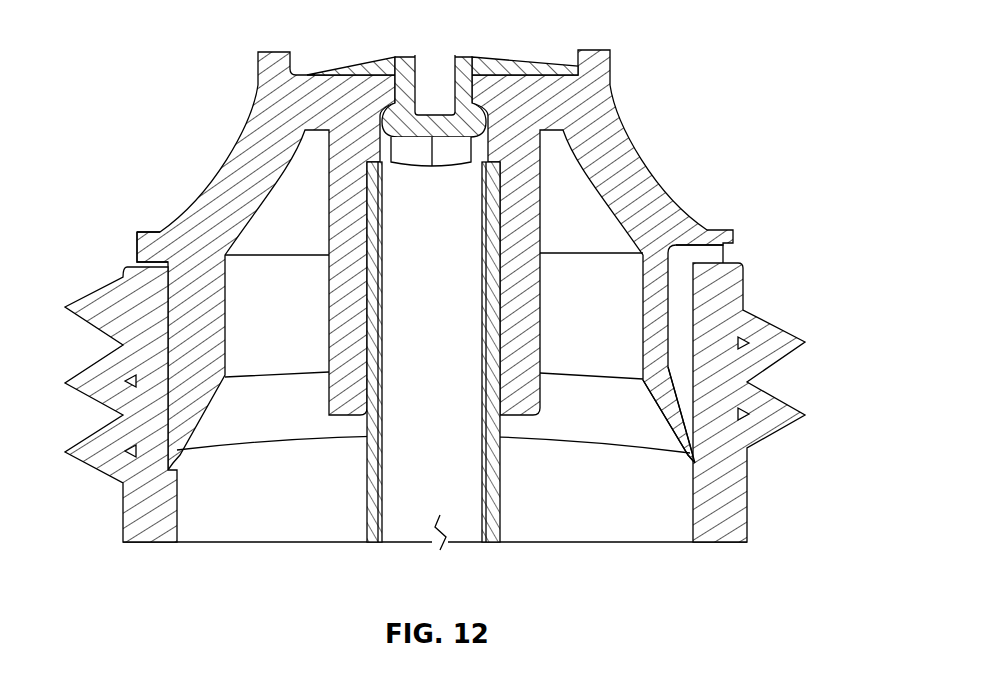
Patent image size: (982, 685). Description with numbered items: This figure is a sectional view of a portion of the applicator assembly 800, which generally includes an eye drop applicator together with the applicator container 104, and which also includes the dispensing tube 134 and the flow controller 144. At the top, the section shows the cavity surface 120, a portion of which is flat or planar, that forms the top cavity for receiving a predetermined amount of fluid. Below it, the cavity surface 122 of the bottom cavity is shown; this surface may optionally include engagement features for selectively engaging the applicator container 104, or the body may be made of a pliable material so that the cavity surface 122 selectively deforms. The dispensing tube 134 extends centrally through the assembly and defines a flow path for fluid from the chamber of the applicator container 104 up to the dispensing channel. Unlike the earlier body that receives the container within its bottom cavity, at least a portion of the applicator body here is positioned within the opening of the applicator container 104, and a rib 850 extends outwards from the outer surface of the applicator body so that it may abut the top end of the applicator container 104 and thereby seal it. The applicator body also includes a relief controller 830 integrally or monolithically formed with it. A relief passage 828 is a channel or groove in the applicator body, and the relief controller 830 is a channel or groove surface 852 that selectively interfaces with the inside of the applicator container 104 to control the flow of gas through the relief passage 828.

The applicator assembly 800 is at (441, 298).
The cavity surface 120 is at (308, 63).
The flow controller 144 is at (466, 62).
The dispensing tube 134 is at (472, 527).
The cavity surface 122 is at (252, 335).
The rib 850 is at (150, 250).
The applicator container 104 is at (95, 445).
The relief passage 828 is at (705, 259).
The relief controller 830 is at (690, 423).
The channel or groove surface 852 is at (738, 436).